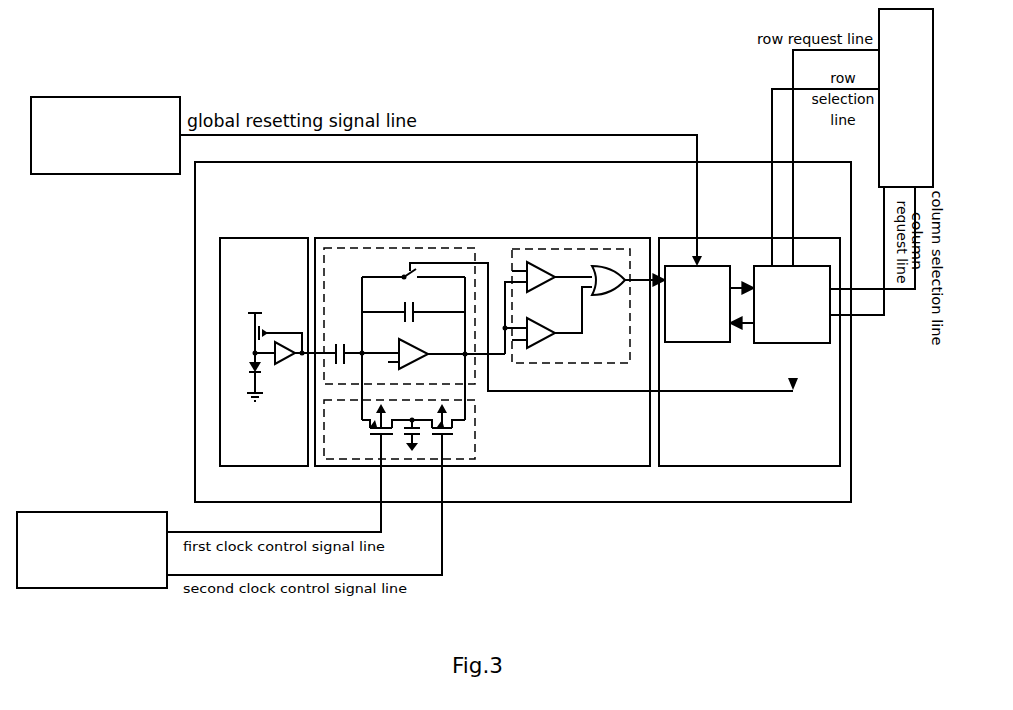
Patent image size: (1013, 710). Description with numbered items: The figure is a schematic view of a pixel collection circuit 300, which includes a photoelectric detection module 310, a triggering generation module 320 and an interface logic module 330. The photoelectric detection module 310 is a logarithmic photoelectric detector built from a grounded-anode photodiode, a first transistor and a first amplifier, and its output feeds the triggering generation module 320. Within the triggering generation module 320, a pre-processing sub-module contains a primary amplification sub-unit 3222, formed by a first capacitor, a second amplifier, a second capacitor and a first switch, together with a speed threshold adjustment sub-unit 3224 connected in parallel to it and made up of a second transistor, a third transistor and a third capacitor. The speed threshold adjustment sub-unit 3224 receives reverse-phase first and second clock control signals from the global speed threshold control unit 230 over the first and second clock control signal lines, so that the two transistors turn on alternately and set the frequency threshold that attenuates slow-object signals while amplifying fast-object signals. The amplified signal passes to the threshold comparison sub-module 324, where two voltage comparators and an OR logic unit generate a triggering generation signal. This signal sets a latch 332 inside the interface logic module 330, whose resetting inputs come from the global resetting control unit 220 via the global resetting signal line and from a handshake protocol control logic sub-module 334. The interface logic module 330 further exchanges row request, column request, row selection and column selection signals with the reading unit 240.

The global resetting control unit 220 is at (105, 135).
The global speed threshold control unit 230 is at (92, 550).
The reading unit 240 is at (906, 98).
The pixel collection circuit 300 is at (851, 472).
The photoelectric detection module 310 is at (238, 232).
The triggering generation module 320 is at (471, 232).
The primary amplification sub-unit 3222 is at (341, 242).
The speed threshold adjustment sub-unit 3224 is at (478, 430).
The threshold comparison sub-module 324 is at (586, 240).
The interface logic module 330 is at (701, 230).
The latch 332 is at (697, 304).
The handshake protocol control logic sub-module 334 is at (792, 304).